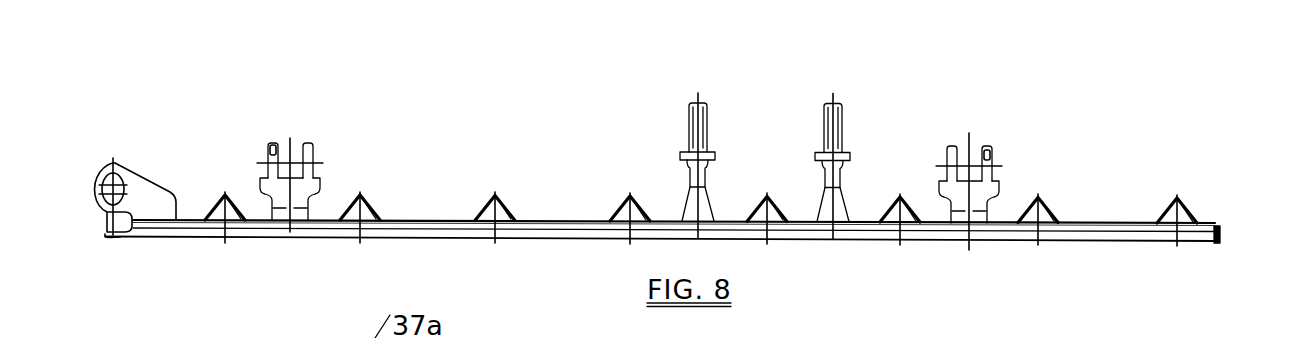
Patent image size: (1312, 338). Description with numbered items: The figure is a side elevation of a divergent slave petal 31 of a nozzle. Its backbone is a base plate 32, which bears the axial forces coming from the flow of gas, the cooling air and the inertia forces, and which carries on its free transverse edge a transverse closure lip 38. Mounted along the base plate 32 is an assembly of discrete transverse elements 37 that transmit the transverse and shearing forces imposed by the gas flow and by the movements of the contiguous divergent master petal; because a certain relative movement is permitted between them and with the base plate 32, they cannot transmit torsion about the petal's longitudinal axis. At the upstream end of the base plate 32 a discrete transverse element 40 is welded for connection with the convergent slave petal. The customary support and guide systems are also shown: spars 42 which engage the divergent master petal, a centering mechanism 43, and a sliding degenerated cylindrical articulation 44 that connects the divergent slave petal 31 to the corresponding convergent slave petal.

The divergent slave petal 31 is at (807, 92).
The base plate 32 is at (993, 242).
The discrete transverse elements 37 is at (623, 202).
The transverse closure lip 38 is at (1220, 244).
The discrete transverse element for connection with the convergent slave petal 40 is at (219, 202).
The spars 42 is at (273, 153).
The centering mechanism 43 is at (833, 122).
The sliding degenerated cylindrical articulation 44 is at (107, 167).